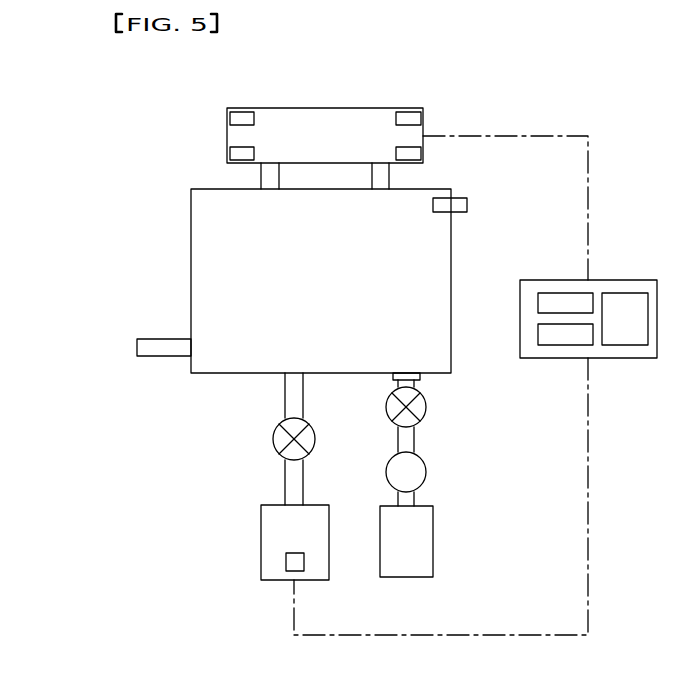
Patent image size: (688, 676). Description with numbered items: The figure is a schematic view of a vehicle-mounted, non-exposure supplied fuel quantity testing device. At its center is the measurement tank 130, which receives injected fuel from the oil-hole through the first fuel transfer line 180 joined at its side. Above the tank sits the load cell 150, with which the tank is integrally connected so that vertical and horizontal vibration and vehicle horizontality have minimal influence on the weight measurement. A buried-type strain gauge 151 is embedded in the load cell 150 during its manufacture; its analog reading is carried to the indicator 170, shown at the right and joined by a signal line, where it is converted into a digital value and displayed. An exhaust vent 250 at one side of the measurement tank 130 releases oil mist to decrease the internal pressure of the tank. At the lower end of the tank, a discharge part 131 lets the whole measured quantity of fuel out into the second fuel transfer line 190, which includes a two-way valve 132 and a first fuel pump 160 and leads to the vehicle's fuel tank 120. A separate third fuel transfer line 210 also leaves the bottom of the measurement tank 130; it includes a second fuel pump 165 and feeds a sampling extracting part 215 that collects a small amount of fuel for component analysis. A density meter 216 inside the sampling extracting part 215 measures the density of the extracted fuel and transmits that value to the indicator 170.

The fuel tank 120 is at (433, 520).
The measurement tank 130 is at (191, 237).
The discharge part 131 is at (394, 375).
The two-way valve 132 is at (417, 408).
The load cell 150 is at (227, 129).
The strain gauge 151 is at (237, 110).
The first fuel pump 160 is at (415, 473).
The second fuel pump 165 is at (280, 447).
The indicator 170 is at (615, 293).
The first fuel transfer line 180 is at (154, 345).
The second fuel transfer line 190 is at (406, 437).
The third fuel transfer line 210 is at (285, 475).
The sampling extracting part 215 is at (266, 541).
The density meter 216 is at (285, 560).
The exhaust vent 250 is at (462, 198).